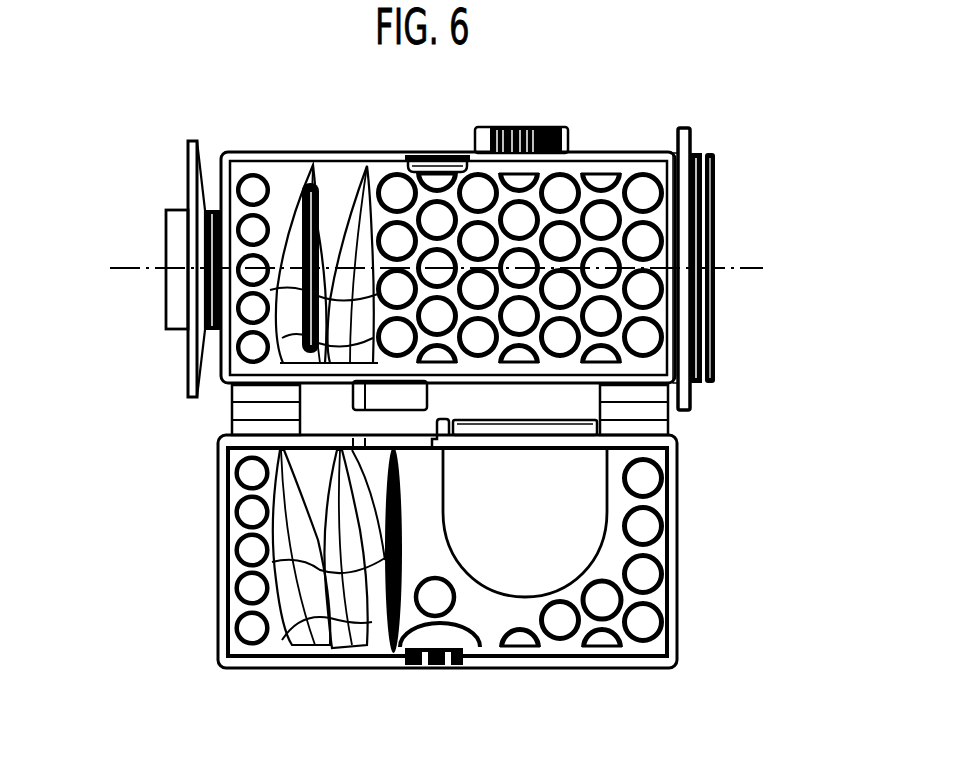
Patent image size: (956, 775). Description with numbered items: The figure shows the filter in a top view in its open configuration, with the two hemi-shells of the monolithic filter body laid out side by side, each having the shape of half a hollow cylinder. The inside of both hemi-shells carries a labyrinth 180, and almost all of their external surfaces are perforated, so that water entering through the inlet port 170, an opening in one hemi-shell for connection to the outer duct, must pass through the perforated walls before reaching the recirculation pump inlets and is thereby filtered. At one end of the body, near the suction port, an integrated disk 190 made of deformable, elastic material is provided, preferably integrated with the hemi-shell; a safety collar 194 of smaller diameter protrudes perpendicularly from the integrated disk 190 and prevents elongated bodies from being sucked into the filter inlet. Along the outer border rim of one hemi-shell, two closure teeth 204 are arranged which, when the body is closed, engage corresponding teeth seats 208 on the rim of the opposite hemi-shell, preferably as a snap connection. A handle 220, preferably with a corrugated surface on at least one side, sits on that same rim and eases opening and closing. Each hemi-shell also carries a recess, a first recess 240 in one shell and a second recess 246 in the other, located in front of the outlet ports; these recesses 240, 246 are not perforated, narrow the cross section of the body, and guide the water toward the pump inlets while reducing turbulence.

The inlet port 170 is at (590, 566).
The labyrinth 180 is at (643, 340).
The integrated disk 190 is at (198, 181).
The safety collar 194 is at (180, 302).
The closure teeth 204 is at (420, 662).
The teeth seat 208 is at (462, 153).
The handle 220 is at (553, 127).
The first recess 240 is at (300, 626).
The second recess 246 is at (287, 250).